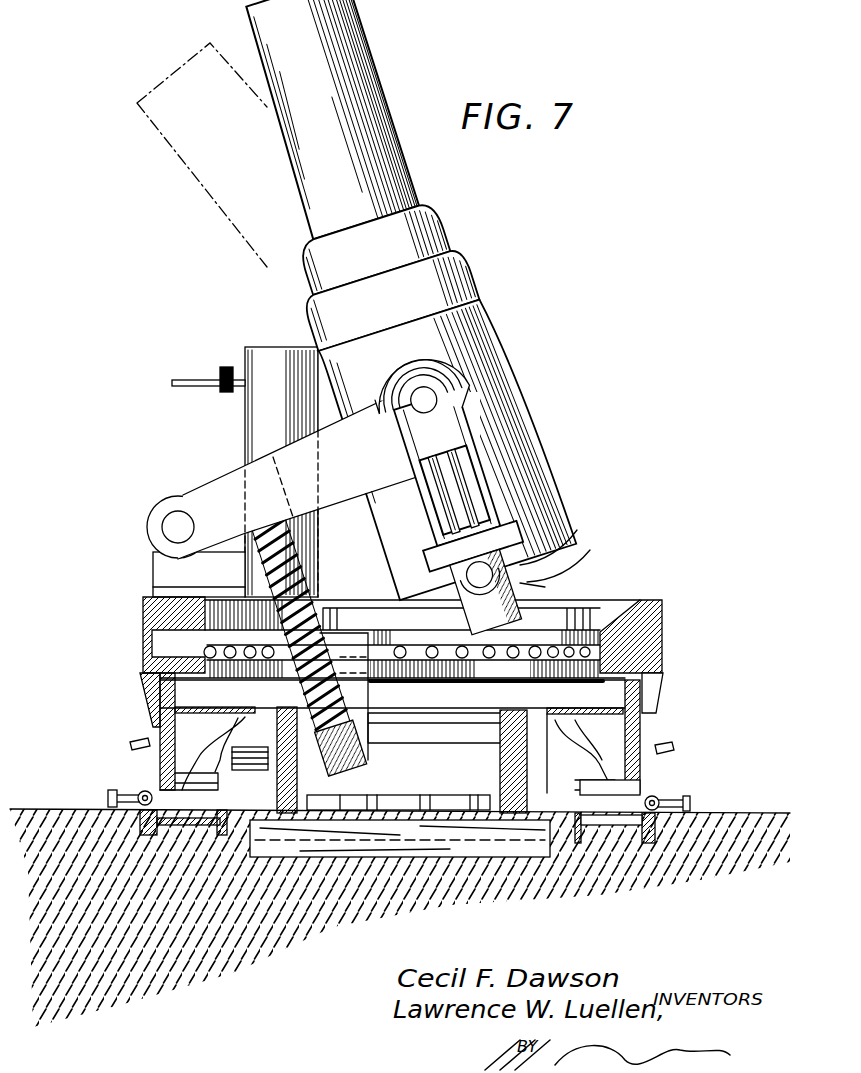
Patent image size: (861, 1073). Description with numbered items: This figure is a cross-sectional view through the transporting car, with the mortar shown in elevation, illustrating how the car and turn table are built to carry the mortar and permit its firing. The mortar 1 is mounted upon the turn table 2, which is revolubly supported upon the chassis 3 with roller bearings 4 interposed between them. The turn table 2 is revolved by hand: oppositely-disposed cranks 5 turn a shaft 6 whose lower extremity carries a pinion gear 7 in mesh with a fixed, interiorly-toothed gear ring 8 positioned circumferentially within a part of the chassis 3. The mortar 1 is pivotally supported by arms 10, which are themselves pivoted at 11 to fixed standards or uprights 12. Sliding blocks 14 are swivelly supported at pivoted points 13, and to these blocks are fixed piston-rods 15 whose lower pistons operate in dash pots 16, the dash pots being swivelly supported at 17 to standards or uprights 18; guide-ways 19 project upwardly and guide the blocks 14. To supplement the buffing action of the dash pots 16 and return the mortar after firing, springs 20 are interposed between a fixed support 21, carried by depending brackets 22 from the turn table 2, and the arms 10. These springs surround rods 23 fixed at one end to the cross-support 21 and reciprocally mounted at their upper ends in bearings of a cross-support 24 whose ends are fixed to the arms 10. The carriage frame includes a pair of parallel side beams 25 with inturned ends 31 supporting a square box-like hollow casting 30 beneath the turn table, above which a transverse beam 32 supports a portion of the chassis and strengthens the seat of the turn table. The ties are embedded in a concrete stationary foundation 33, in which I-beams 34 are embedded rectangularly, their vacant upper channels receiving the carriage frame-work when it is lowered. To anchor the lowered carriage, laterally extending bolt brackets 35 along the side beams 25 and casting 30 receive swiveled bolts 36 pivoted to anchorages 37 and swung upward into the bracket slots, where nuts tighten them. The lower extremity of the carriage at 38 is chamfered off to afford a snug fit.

The mortar 1 is at (487, 313).
The turn table 2 is at (662, 603).
The chassis 3 is at (653, 683).
The roller bearings 4 is at (163, 642).
The cranks 5 is at (173, 385).
The shaft 6 is at (160, 623).
The pinion gear 7 is at (233, 680).
The gear ring 8 is at (473, 677).
The arms 10 is at (329, 475).
The pivot 11 is at (170, 530).
The standards or uprights 12 is at (167, 568).
The pivoted points 13 is at (428, 400).
The sliding blocks 14 is at (447, 468).
The piston-rods 15 is at (457, 500).
The dash pots 16 is at (505, 615).
The swivel support 17 is at (547, 560).
The standards or uprights 18 is at (530, 570).
The guide-ways 19 is at (470, 472).
The springs 20 is at (297, 567).
The fixed support 21 is at (360, 765).
The depending brackets 22 is at (434, 715).
The rods 23 is at (333, 607).
The cross-support 24 is at (243, 560).
The side beams 25 is at (642, 763).
The hollow casting 30 is at (607, 730).
The inturned ends 31 is at (645, 797).
The beam 32 is at (585, 701).
The stationary foundation 33 is at (187, 960).
The I-beams 34 is at (197, 820).
The bolt brackets 35 is at (140, 741).
The swiveled bolts 36 is at (127, 797).
The anchorages 37 is at (140, 827).
The chamfered lower extremity 38 is at (163, 787).